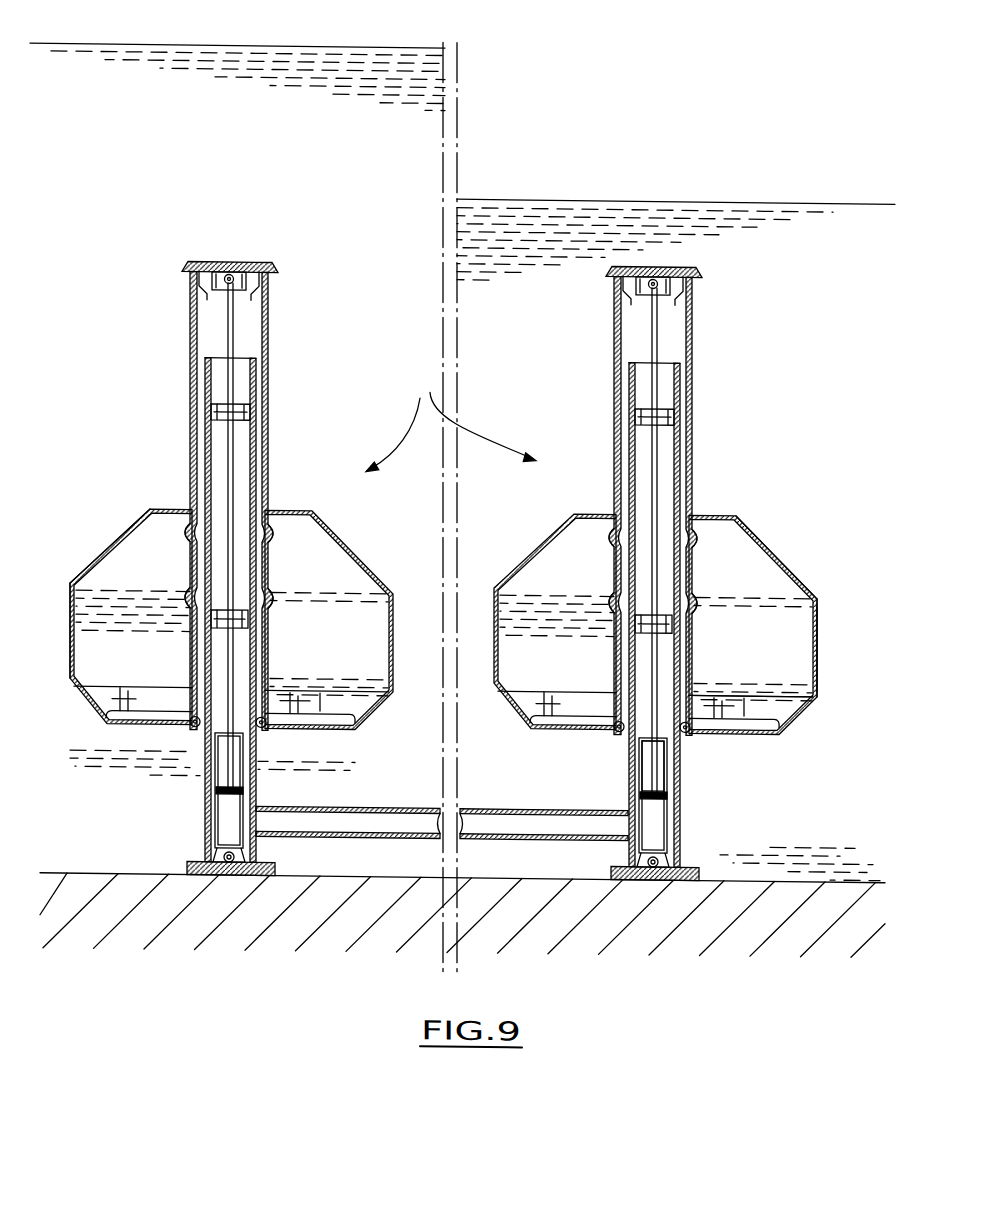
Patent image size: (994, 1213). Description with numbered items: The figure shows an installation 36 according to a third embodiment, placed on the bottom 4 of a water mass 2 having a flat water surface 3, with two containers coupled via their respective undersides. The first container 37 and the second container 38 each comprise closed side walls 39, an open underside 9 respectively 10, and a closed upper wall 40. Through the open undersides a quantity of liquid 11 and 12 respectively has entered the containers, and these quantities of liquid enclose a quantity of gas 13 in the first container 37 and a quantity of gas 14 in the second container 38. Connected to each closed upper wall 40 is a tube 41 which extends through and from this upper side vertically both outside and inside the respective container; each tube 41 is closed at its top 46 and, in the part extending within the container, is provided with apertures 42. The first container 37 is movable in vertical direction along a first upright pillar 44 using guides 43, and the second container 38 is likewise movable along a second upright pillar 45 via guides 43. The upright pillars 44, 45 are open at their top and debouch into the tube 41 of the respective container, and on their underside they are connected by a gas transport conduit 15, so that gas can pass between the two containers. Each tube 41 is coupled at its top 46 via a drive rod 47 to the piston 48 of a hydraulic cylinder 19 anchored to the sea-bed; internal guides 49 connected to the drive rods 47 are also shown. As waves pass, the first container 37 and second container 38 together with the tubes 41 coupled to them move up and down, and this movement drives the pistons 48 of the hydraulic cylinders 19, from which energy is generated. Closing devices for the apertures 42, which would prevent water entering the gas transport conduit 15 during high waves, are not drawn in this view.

The water mass 2 is at (272, 76).
The water surface 3 is at (370, 47).
The bottom 4 is at (597, 908).
The open underside 9 is at (747, 729).
The open underside 10 is at (155, 720).
The quantity of liquid 11 is at (781, 703).
The quantity of liquid 12 is at (120, 657).
The quantity of gas 13 is at (776, 620).
The quantity of gas 14 is at (128, 568).
The gas transport conduit 15 is at (530, 804).
The hydraulic cylinder 19 is at (230, 815).
The installation 36 is at (451, 417).
The first container 37 is at (773, 549).
The second container 38 is at (125, 535).
The closed side walls 39 is at (70, 634).
The closed upper wall 40 is at (284, 510).
The tube 41 is at (193, 395).
The apertures 42 is at (192, 605).
The guides 43 is at (194, 727).
The first upright pillar 44 is at (676, 800).
The second upright pillar 45 is at (204, 850).
The top 46 is at (224, 266).
The drive rod 47 is at (228, 318).
The piston 48 is at (245, 789).
The internal guides 49 is at (250, 407).